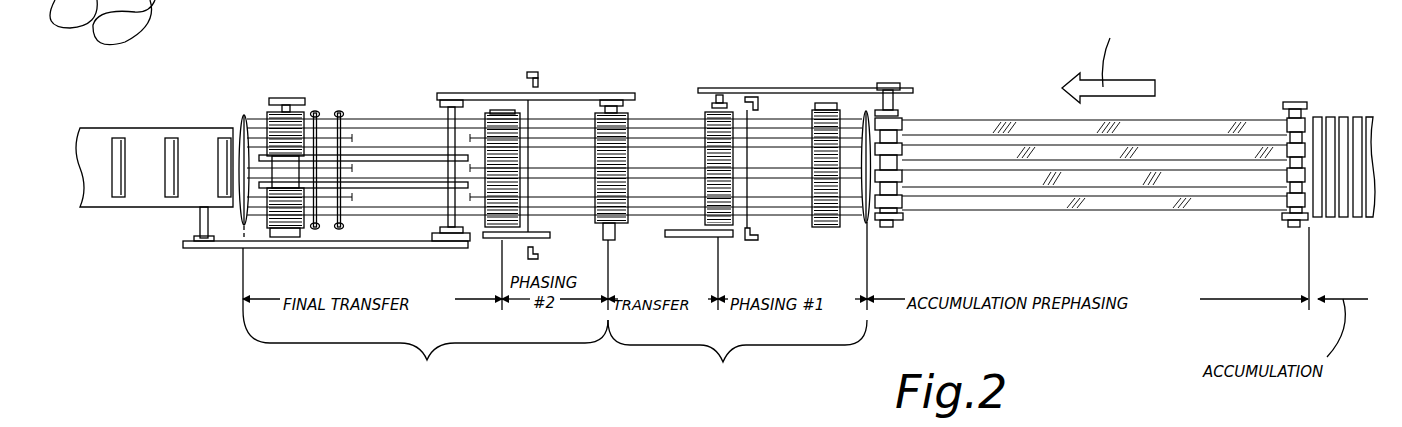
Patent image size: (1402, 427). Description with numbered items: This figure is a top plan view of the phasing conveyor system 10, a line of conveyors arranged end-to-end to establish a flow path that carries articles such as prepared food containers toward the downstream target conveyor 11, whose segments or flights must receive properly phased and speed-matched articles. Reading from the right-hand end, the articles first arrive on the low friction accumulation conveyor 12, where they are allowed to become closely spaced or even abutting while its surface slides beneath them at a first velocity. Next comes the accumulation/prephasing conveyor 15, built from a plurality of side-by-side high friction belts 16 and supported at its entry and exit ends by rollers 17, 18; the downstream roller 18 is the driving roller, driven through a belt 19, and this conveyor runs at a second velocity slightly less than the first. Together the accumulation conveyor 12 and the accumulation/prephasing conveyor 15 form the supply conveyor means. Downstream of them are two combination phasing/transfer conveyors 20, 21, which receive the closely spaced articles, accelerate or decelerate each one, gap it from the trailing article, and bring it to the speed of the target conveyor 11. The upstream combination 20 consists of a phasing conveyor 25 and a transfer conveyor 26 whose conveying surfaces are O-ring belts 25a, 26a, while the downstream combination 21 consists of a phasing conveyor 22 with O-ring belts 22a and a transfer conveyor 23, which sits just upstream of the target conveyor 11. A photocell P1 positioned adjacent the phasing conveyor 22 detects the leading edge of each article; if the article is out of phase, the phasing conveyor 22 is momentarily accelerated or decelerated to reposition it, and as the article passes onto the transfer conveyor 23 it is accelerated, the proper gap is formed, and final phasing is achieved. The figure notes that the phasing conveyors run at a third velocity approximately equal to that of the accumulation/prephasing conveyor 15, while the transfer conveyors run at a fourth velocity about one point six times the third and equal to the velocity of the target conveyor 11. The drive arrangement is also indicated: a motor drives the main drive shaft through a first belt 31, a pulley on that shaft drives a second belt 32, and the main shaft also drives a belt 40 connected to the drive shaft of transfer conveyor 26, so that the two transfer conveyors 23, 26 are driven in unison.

The phasing conveyor system 10 is at (820, 27).
The target conveyor 11 is at (168, 210).
The accumulation conveyor 12 is at (1343, 210).
The accumulation/prephasing conveyor 15 is at (1094, 133).
The high friction belts 16 is at (962, 180).
The entry roller 17 is at (1285, 115).
The downstream roller 18 is at (897, 117).
The belt 19 is at (780, 88).
The phasing/transfer conveyor 20 is at (737, 353).
The phasing/transfer conveyor 21 is at (425, 354).
The phasing conveyor 22 is at (563, 117).
The O-ring belts 22a is at (573, 213).
The transfer conveyor 23 is at (333, 90).
The phasing conveyor 25 is at (764, 117).
The O-ring belts 25a is at (790, 210).
The transfer conveyor 26 is at (647, 112).
The O-ring belts 26a is at (652, 213).
The first belt 31 is at (282, 248).
The second belt 32 is at (343, 233).
The belt 40 is at (490, 93).
The photocell P1 is at (537, 72).